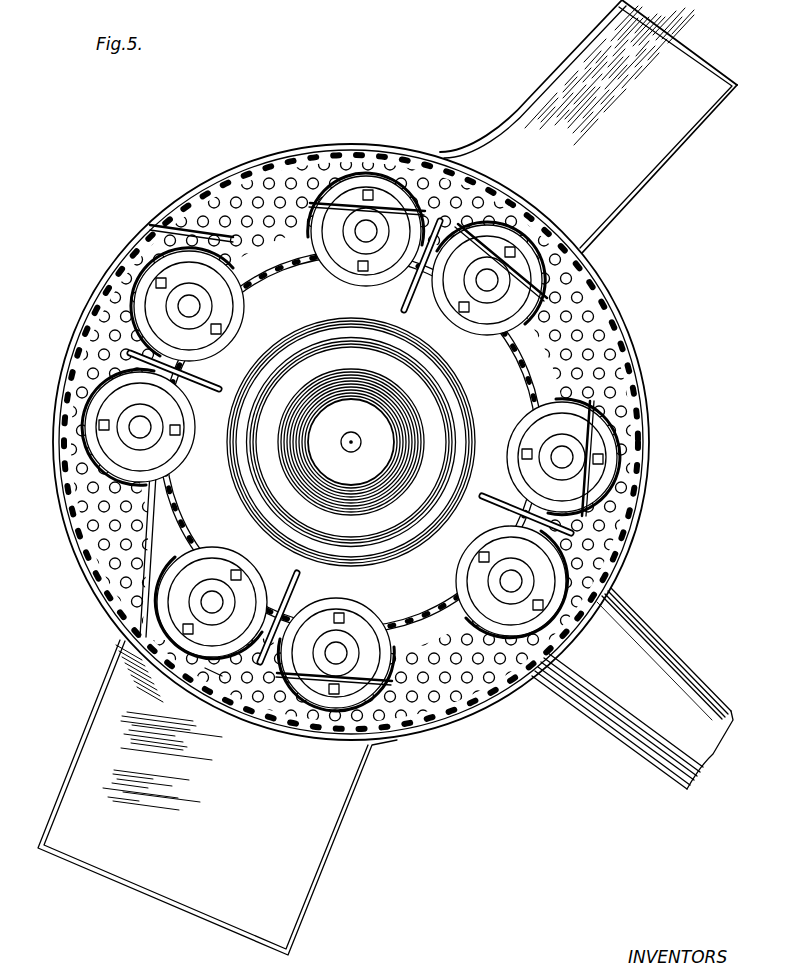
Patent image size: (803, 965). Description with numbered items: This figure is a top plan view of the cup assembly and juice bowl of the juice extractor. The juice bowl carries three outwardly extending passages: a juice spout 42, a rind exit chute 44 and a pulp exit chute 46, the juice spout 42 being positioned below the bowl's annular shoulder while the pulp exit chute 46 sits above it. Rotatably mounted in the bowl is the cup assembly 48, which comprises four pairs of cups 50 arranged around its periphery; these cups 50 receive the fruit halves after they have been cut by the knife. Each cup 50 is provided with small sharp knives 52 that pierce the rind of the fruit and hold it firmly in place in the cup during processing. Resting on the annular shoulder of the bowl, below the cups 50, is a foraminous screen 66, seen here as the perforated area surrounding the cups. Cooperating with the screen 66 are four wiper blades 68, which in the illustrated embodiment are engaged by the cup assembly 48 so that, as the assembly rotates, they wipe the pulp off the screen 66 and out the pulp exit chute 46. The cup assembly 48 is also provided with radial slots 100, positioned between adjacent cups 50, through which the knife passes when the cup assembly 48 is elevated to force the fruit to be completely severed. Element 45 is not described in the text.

The juice spout 42 is at (668, 652).
The rind exit chute 44 is at (318, 845).
The pin 45 is at (210, 672).
The pulp exit chute 46 is at (550, 110).
The cup assembly 48 is at (550, 370).
The cups 50 is at (343, 263).
The small sharp knives 52 is at (163, 277).
The foraminous screen 66 is at (408, 160).
The wiper blades 68 is at (199, 210).
The radial slots 100 is at (135, 354).